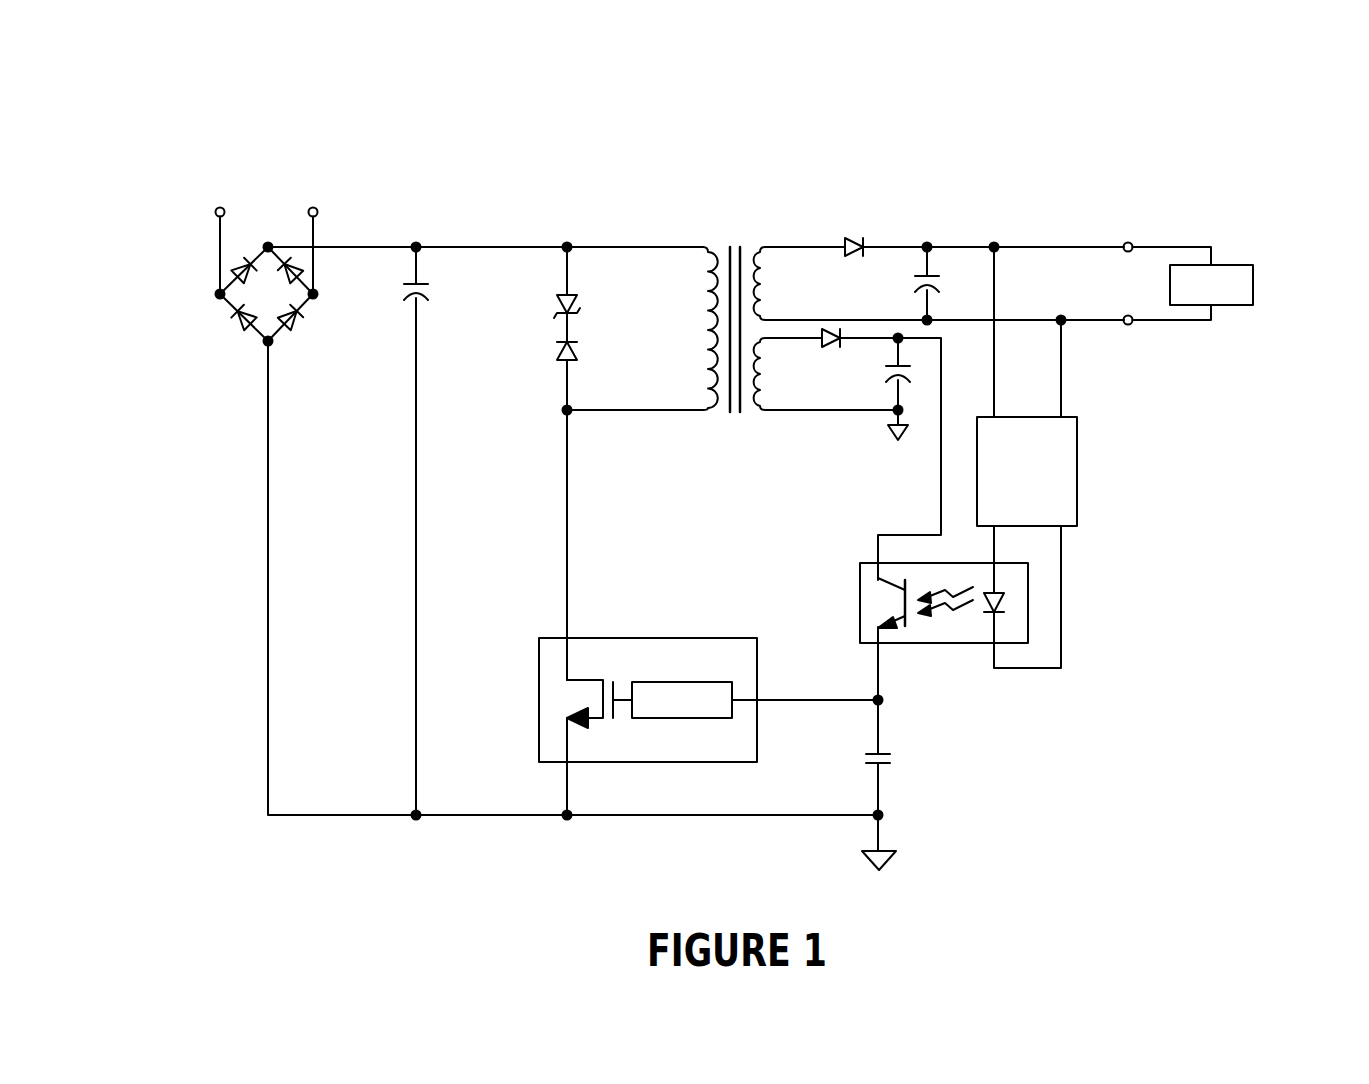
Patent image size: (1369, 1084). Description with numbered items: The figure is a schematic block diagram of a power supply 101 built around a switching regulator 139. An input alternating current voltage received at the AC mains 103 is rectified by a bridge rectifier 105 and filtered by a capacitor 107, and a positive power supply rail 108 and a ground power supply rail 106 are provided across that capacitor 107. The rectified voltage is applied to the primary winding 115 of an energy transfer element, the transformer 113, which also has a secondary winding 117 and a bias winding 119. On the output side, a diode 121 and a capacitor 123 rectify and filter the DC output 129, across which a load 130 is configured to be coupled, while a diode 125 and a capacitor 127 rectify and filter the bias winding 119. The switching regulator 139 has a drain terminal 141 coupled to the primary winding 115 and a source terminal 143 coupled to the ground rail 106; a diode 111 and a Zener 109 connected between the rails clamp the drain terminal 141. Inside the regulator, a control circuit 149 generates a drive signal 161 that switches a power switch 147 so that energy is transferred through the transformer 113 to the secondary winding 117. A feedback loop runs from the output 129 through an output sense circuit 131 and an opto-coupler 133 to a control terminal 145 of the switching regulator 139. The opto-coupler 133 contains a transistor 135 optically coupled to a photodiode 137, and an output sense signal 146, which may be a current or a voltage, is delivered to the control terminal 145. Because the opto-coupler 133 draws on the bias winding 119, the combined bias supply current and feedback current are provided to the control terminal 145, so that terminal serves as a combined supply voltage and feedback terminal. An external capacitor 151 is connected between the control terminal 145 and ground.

The power supply 101 is at (1196, 160).
The AC mains 103 is at (223, 163).
The bridge rectifier 105 is at (238, 350).
The ground power supply rail 106 is at (345, 822).
The capacitor 107 is at (440, 296).
The positive power supply rail 108 is at (358, 240).
The Zener 109 is at (583, 306).
The diode 111 is at (583, 350).
The transformer 113 is at (735, 233).
The primary winding 115 is at (712, 418).
The secondary winding 117 is at (762, 238).
The bias winding 119 is at (758, 420).
The diode 121 is at (855, 233).
The capacitor 123 is at (900, 282).
The diode 125 is at (828, 352).
The capacitor 127 is at (882, 376).
The DC output 129 is at (1068, 275).
The load 130 is at (1262, 286).
The output sense circuit 131 is at (1078, 470).
The opto-coupler 133 is at (860, 572).
The transistor 135 is at (860, 618).
The photodiode 137 is at (990, 628).
The switching regulator 139 is at (539, 650).
The drain terminal 141 is at (572, 633).
The source terminal 143 is at (563, 768).
The control terminal 145 is at (765, 706).
The output sense signal 146 is at (806, 693).
The power switch 147 is at (560, 698).
The control circuit 149 is at (705, 686).
The external capacitor 151 is at (900, 758).
The drive signal 161 is at (620, 685).